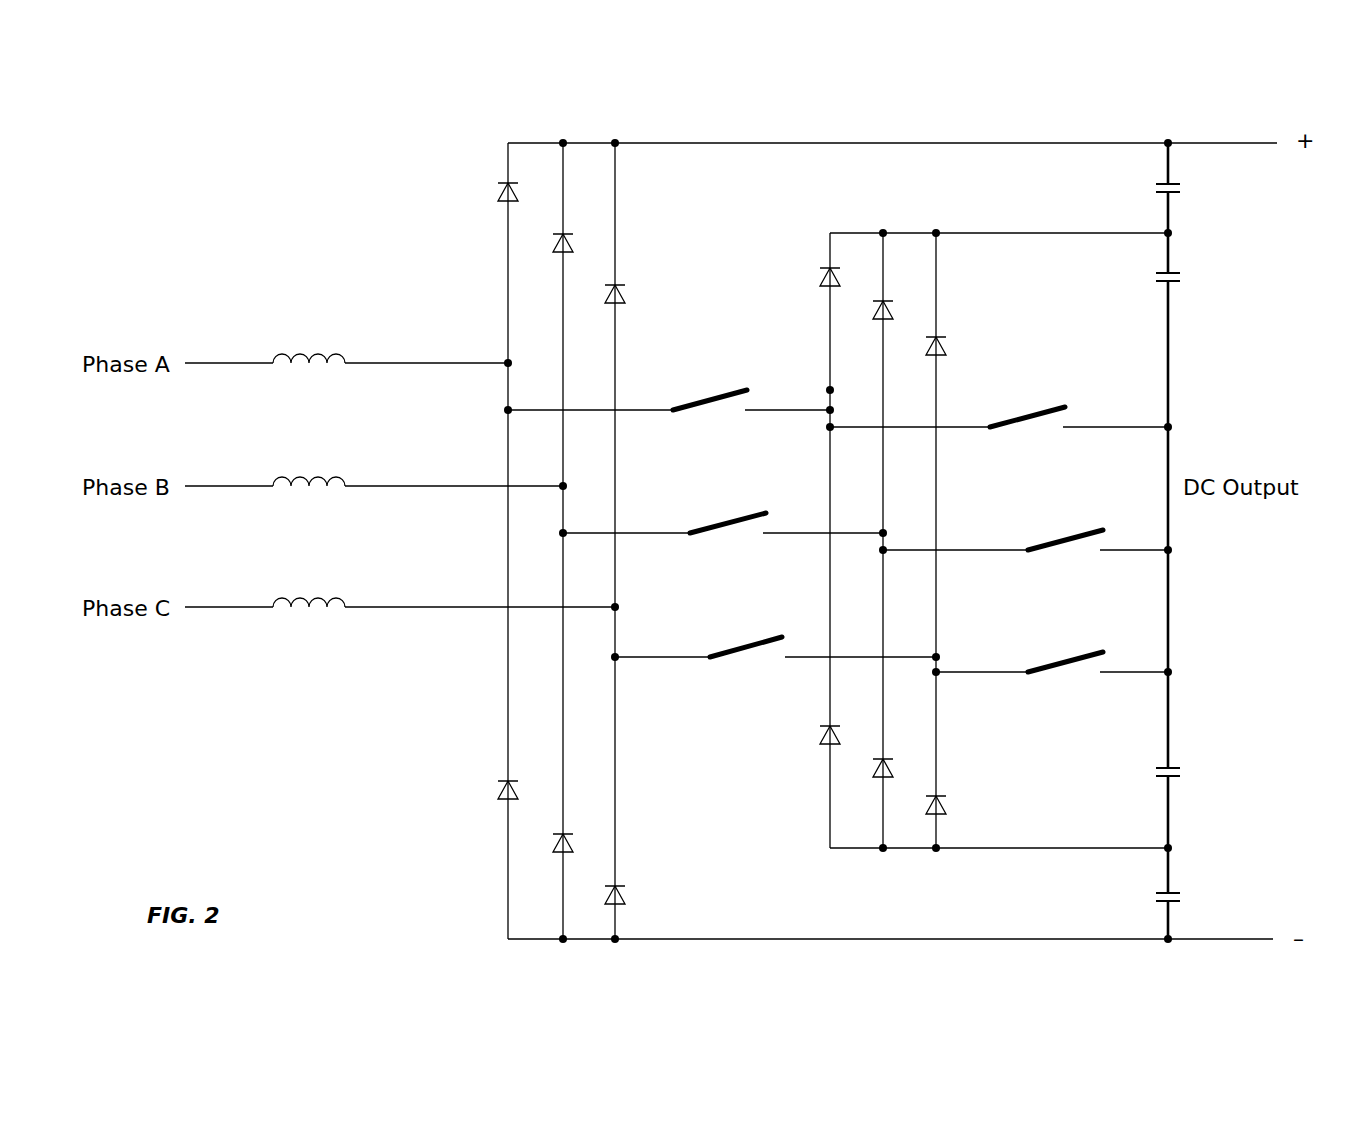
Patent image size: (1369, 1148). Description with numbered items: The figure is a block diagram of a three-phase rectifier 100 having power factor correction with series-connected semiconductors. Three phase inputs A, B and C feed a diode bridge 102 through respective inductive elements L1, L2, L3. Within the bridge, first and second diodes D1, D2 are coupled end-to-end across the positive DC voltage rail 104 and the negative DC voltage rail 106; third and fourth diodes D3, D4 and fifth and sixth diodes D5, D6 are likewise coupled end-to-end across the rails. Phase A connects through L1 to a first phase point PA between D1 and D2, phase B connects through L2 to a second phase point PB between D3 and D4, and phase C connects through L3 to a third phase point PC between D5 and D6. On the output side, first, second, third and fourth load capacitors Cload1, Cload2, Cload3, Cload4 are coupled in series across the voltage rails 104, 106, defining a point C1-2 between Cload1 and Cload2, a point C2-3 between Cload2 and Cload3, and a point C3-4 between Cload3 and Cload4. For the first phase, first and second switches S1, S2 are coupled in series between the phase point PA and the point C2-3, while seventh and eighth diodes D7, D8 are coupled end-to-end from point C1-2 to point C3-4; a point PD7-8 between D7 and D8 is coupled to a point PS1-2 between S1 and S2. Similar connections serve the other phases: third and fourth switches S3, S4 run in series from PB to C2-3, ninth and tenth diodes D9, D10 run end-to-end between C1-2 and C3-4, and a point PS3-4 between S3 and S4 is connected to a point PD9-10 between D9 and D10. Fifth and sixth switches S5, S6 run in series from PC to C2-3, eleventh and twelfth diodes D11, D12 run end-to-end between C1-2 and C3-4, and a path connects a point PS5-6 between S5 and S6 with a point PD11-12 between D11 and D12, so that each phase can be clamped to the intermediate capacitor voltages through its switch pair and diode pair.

The three-phase rectifier 100 is at (934, 130).
The diode bridge 102 is at (558, 336).
The positive DC voltage rail 104 is at (530, 143).
The negative DC voltage rail 106 is at (680, 939).
The first diode D1 is at (526, 193).
The second diode D2 is at (526, 791).
The third diode D3 is at (581, 244).
The fourth diode D4 is at (581, 844).
The fifth diode D5 is at (633, 295).
The sixth diode D6 is at (633, 896).
The seventh diode D7 is at (848, 278).
The eighth diode D8 is at (848, 736).
The ninth diode D9 is at (901, 313).
The tenth diode D10 is at (903, 754).
The eleventh diode D11 is at (961, 347).
The twelfth diode D12 is at (961, 806).
The first switch S1 is at (997, 405).
The second switch S2 is at (669, 388).
The third switch S3 is at (1025, 529).
The fourth switch S4 is at (723, 511).
The fifth switch S5 is at (1052, 651).
The sixth switch S6 is at (775, 635).
The inductive element L1 is at (346, 344).
The inductive element L2 is at (374, 467).
The inductive element L3 is at (400, 588).
The first phase point PA is at (508, 363).
The second phase point PB is at (563, 486).
The third phase point PC is at (615, 607).
The point between seventh and eighth diodes PD7-8 is at (830, 390).
The point between ninth and tenth diodes PD9-10 is at (883, 533).
The point between eleventh and twelfth diodes PD11-12 is at (936, 657).
The point between first and second switches PS1-2 is at (830, 427).
The point between third and fourth switches PS3-4 is at (985, 528).
The point between fifth and sixth switches PS5-6 is at (1028, 672).
The first load capacitor Cload1 is at (1210, 188).
The second load capacitor Cload2 is at (1210, 277).
The third load capacitor Cload3 is at (1211, 772).
The fourth load capacitor Cload4 is at (1210, 897).
The point between first and second load capacitors C1-2 is at (1168, 233).
The point between second and third load capacitors C2-3 is at (1168, 427).
The point between third and fourth load capacitors C3-4 is at (1168, 848).